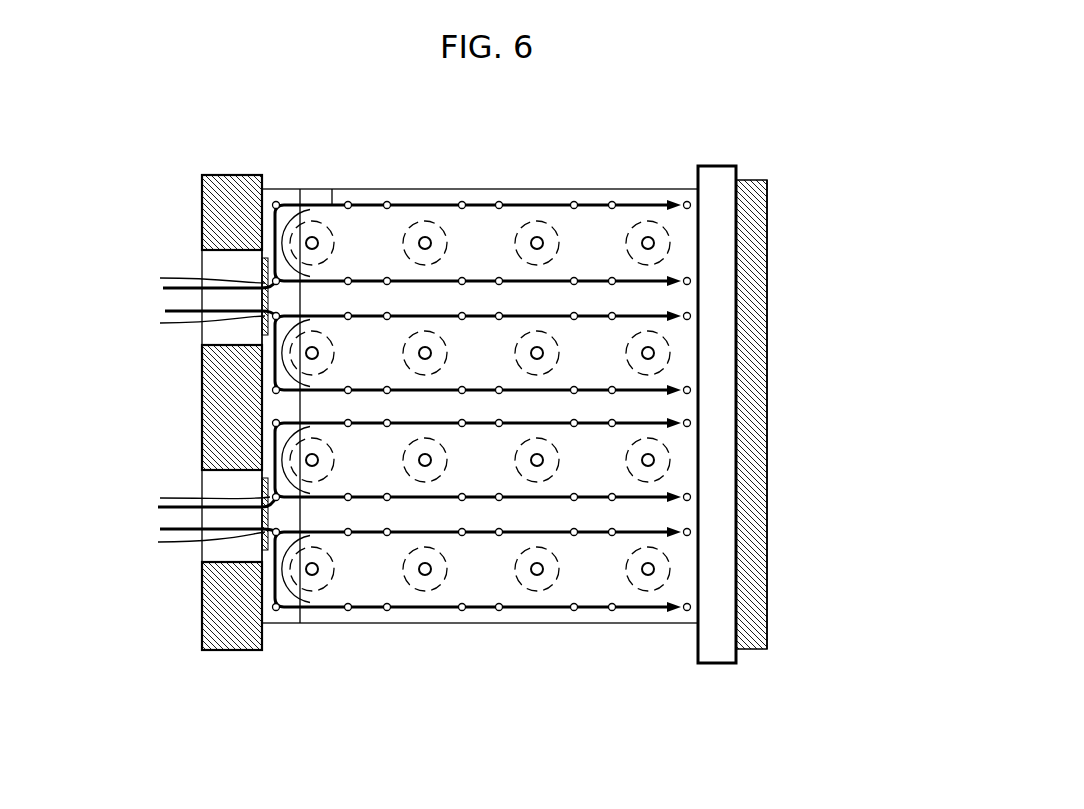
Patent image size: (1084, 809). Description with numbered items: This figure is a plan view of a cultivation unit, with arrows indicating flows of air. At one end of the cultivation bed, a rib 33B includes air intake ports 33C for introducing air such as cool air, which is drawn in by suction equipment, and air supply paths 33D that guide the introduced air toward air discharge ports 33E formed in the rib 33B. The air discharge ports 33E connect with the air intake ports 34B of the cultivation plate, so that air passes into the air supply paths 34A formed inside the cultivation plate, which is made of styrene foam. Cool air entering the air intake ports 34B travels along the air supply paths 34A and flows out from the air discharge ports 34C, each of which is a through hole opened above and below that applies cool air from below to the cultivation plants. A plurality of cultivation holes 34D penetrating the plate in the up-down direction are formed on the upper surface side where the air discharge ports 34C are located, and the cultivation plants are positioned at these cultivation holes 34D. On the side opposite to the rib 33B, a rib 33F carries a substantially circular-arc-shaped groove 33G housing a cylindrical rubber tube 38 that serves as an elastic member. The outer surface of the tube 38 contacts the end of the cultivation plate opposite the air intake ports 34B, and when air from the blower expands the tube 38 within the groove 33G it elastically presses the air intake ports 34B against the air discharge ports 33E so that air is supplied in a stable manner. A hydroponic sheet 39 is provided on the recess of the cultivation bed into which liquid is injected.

The rib 33B is at (232, 190).
The air intake port 33C is at (200, 337).
The air supply path 33D is at (218, 262).
The air discharge port 33E is at (212, 248).
The rib 33F is at (767, 486).
The groove 33G is at (738, 379).
The air supply path 34A is at (415, 203).
The air intake port 34B is at (283, 258).
The air discharge port 34C is at (478, 220).
The cultivation hole 34D is at (537, 243).
The tube 38 is at (722, 265).
The hydroponic sheet 39 is at (702, 338).